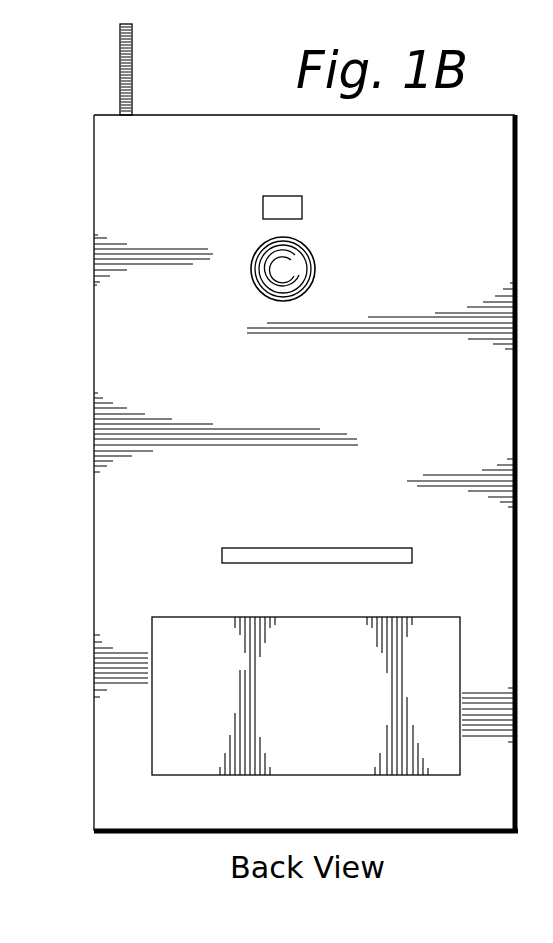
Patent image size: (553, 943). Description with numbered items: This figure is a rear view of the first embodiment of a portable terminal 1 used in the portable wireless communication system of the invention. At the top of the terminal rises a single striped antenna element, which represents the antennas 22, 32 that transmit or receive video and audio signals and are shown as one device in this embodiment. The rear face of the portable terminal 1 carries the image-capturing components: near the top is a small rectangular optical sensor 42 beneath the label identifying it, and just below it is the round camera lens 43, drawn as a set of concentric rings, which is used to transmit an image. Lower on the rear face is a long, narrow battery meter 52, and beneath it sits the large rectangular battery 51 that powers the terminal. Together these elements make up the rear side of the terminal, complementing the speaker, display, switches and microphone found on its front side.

The portable terminal 1 is at (94, 302).
The antenna 22 is at (189, 69).
The antenna 32 is at (133, 67).
The optical sensor 42 is at (302, 207).
The camera lens 43 is at (316, 266).
The battery 51 is at (148, 742).
The battery meter 52 is at (250, 547).